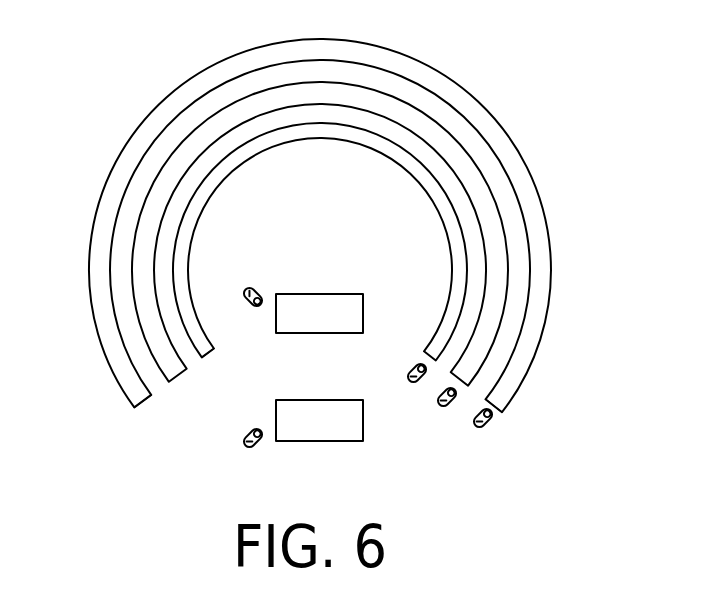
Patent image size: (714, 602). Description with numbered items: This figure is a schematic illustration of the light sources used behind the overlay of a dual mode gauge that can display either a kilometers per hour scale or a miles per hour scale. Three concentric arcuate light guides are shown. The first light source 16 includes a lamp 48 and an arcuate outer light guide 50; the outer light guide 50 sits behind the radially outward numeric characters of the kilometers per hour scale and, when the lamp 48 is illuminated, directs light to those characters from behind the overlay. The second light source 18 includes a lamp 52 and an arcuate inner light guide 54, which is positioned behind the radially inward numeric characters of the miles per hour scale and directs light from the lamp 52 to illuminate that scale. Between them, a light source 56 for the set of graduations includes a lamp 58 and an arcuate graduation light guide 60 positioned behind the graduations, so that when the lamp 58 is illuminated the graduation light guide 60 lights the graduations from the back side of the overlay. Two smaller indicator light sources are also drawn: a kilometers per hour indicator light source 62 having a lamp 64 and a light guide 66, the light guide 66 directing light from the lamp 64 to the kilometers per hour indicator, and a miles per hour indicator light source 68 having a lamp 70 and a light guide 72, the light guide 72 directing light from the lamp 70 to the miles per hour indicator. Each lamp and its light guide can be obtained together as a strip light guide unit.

The first light source 16 is at (145, 399).
The second light source 18 is at (210, 358).
The lamp 48 is at (490, 426).
The arcuate outer light guide 50 is at (512, 373).
The lamp 52 is at (414, 364).
The arcuate inner light guide 54 is at (455, 254).
The light source for the set of graduations 56 is at (522, 258).
The lamp 58 is at (455, 404).
The arcuate graduation light guide 60 is at (477, 186).
The kilometers per hour indicator light source 62 is at (240, 441).
The lamp 64 is at (261, 446).
The light guide 66 is at (302, 392).
The miles per hour indicator light source 68 is at (327, 272).
The lamp 70 is at (262, 292).
The light guide 72 is at (315, 325).